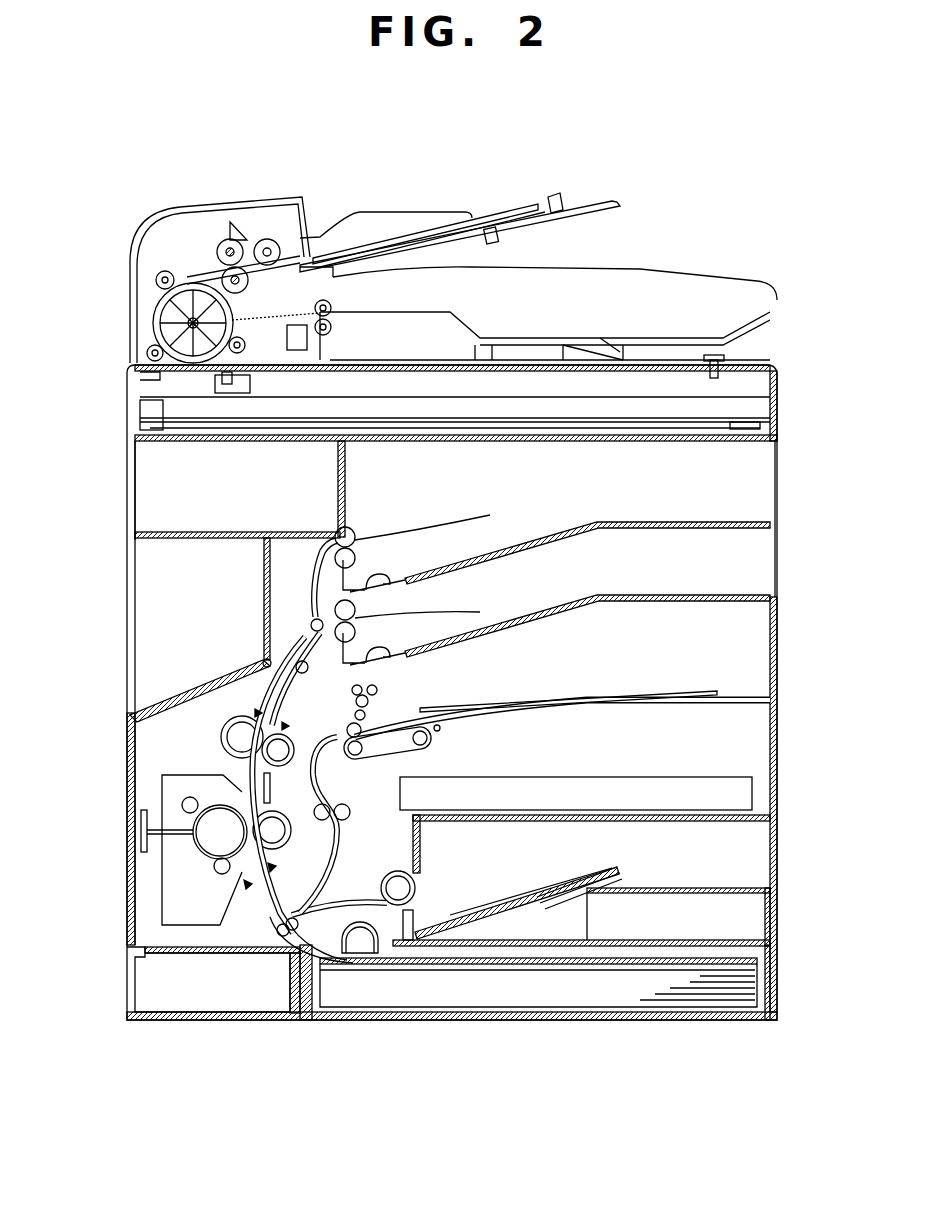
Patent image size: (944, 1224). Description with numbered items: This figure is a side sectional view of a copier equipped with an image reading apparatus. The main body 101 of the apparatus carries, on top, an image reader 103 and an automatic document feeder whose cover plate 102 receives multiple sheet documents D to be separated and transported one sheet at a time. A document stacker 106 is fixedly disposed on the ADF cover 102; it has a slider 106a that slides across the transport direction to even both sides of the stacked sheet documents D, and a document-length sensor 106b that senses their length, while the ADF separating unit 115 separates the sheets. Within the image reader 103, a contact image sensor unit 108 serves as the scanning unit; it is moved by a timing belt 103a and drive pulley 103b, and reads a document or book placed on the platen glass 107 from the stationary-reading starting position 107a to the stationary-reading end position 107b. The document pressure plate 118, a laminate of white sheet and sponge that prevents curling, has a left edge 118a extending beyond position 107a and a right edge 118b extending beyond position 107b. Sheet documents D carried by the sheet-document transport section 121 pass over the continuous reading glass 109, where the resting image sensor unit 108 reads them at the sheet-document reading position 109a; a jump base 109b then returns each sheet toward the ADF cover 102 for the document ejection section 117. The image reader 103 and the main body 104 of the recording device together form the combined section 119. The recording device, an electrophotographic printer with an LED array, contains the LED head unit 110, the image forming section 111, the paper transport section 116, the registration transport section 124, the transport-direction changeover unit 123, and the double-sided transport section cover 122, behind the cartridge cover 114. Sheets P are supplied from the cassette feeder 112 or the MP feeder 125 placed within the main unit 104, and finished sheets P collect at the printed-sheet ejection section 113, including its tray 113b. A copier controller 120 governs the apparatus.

The main body of the apparatus 101 is at (779, 492).
The ADF cover plate 102 is at (668, 288).
The image reader 103 is at (130, 376).
The timing belt 103a is at (462, 422).
The drive pulley 103b is at (747, 432).
The main body of the recording device 104 is at (727, 596).
The document stacker 106 is at (602, 200).
The slider 106a is at (412, 218).
The document-length sensor 106b is at (553, 195).
The platen glass 107 is at (541, 375).
The stationary-reading starting position 107a is at (265, 360).
The stationary-reading end position 107b is at (702, 376).
The contact image sensor unit 108 is at (243, 386).
The continuous reading glass 109 is at (140, 396).
The sheet-document reading position 109a is at (132, 414).
The jump base 109b is at (206, 360).
The LED head unit 110 is at (140, 832).
The image forming section 111 is at (146, 916).
The cassette feeder 112 is at (438, 1005).
The printed-sheet ejection section 113 is at (565, 572).
The upper discharge tray 113b is at (597, 522).
The cartridge cover 114 is at (128, 762).
The ADF separating unit 115 is at (183, 242).
The paper transport section 116 is at (320, 298).
The document ejection section 117 is at (343, 328).
The document pressure plate 118 is at (622, 360).
The left edge of document pressure plate 118a is at (312, 345).
The right edge of document pressure plate 118b is at (720, 355).
The combined section 119 is at (222, 667).
The copier controller 120 is at (558, 778).
The sheet-document transport section 121 is at (157, 313).
The double-sided transport section cover 122 is at (779, 641).
The transport-direction changeover unit 123 is at (280, 607).
The registration transport section 124 is at (240, 900).
The MP feeder 125 is at (420, 890).
The sheet document D is at (494, 215).
The sheet P is at (618, 869).